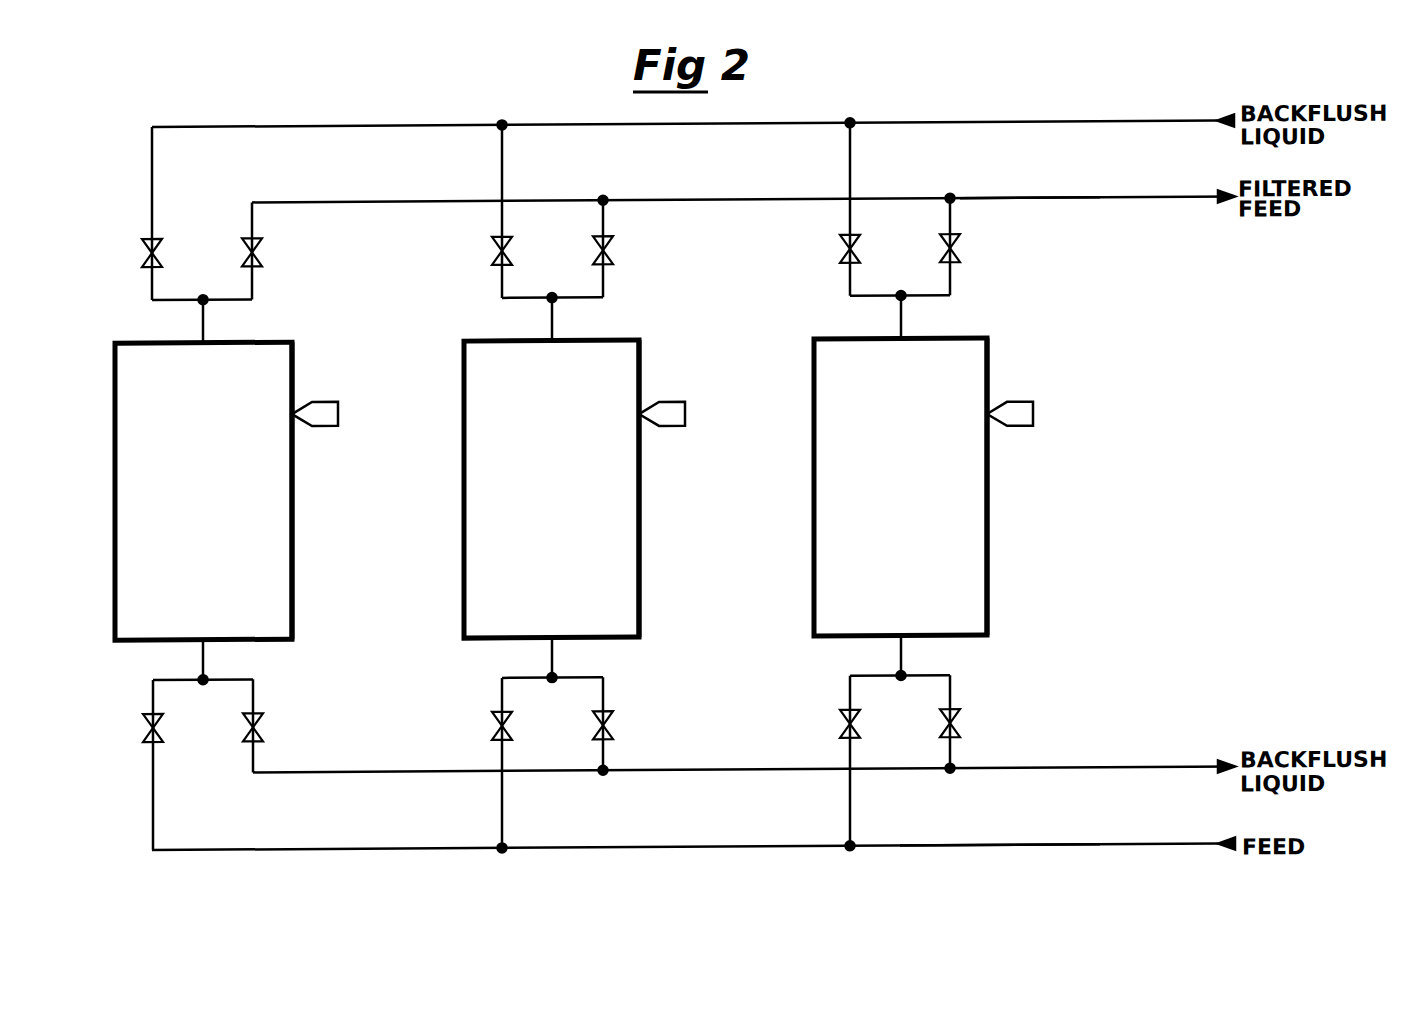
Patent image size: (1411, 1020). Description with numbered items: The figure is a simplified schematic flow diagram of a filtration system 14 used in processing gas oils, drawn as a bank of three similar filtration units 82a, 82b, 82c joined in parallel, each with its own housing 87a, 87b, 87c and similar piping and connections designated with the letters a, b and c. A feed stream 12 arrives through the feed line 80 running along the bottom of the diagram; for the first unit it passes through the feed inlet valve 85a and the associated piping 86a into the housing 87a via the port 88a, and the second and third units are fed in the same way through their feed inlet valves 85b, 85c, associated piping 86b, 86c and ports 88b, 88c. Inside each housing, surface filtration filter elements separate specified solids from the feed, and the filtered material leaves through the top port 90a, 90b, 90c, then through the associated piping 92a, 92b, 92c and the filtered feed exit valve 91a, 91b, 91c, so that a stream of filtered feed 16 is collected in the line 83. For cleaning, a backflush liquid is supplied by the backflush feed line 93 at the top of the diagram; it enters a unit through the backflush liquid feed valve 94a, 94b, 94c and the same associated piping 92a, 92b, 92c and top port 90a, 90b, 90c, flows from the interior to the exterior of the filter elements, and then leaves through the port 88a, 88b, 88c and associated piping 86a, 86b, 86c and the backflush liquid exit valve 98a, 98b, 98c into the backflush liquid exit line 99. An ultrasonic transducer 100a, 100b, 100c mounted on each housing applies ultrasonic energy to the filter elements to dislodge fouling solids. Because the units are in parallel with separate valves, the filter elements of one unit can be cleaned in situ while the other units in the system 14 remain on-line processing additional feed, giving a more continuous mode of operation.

The filtration system 14 is at (126, 120).
The backflush feed line 93 is at (1115, 127).
The line 83 is at (1122, 203).
The filtered feed 16 is at (1066, 204).
The backflush liquid exit line 99 is at (1125, 773).
The feed stream 12 is at (1048, 856).
The feed line 80 is at (1130, 851).
The backflush liquid feed valve 94a is at (142, 250).
The filtered feed exit valve 91a is at (258, 250).
The top port 90a is at (203, 338).
The associated piping 92a is at (222, 302).
The filtration unit 82a is at (115, 470).
The housing 87a is at (292, 582).
The ultrasonic transducer 100a is at (320, 403).
The port 88a is at (203, 645).
The associated piping 86a is at (218, 680).
The feed inlet valve 85a is at (148, 722).
The backflush liquid exit valve 98a is at (260, 730).
The backflush liquid feed valve 94b is at (492, 252).
The filtered feed exit valve 91b is at (608, 252).
The top port 90b is at (552, 340).
The associated piping 92b is at (572, 304).
The filtration unit 82b is at (464, 472).
The housing 87b is at (640, 584).
The ultrasonic transducer 100b is at (669, 405).
The port 88b is at (552, 647).
The associated piping 86b is at (568, 680).
The feed inlet valve 85b is at (496, 724).
The backflush liquid exit valve 98b is at (610, 732).
The backflush liquid feed valve 94c is at (840, 252).
The filtered feed exit valve 91c is at (955, 252).
The top port 90c is at (901, 340).
The associated piping 92c is at (920, 304).
The filtration unit 82c is at (814, 474).
The housing 87c is at (988, 584).
The ultrasonic transducer 100c is at (1017, 407).
The port 88c is at (901, 648).
The associated piping 86c is at (918, 680).
The feed inlet valve 85c is at (845, 726).
The backflush liquid exit valve 98c is at (957, 732).